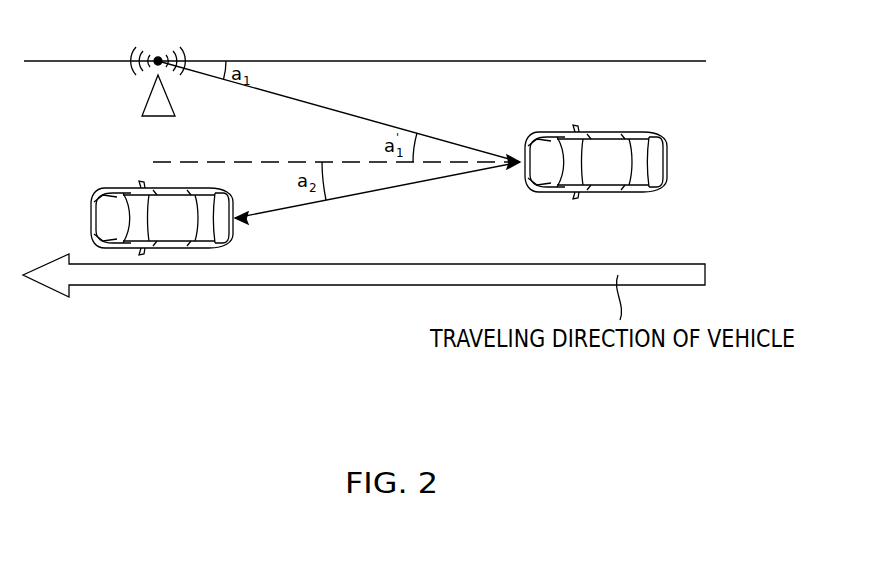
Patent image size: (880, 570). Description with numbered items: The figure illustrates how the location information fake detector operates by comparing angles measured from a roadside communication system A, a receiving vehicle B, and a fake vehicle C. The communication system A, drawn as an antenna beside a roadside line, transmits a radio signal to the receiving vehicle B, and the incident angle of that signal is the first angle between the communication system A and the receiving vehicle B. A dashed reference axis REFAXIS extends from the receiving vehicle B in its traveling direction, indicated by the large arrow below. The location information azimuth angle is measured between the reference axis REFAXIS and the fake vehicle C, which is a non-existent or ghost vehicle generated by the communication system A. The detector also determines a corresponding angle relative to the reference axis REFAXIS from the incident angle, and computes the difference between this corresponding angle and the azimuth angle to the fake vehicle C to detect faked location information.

The communication system A is at (158, 56).
The receiving vehicle B is at (660, 163).
The fake vehicle C is at (175, 240).
The reference axis REFAXIS is at (425, 163).